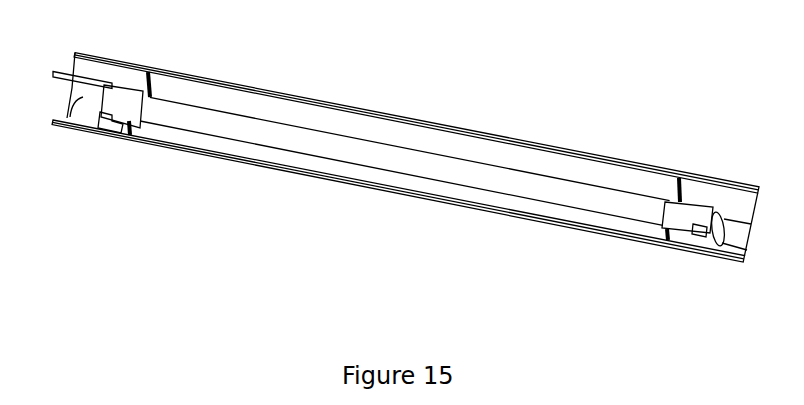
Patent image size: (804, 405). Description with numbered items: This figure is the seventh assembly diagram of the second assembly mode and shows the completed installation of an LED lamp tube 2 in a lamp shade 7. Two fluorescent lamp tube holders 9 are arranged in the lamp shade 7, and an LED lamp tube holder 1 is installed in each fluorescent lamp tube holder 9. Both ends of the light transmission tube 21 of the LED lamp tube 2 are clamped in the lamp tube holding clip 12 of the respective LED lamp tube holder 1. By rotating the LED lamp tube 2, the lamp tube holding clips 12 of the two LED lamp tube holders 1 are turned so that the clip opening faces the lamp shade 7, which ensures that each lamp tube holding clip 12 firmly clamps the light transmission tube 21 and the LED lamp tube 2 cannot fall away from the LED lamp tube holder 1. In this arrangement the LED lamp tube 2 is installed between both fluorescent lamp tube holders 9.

The LED lamp tube holder 1 is at (106, 130).
The LED lamp tube 2 is at (513, 165).
The lamp shade 7 is at (289, 115).
The fluorescent lamp tube holder 9 is at (67, 126).
The lamp tube holding clip 12 is at (129, 100).
The light transmission tube 21 is at (440, 172).